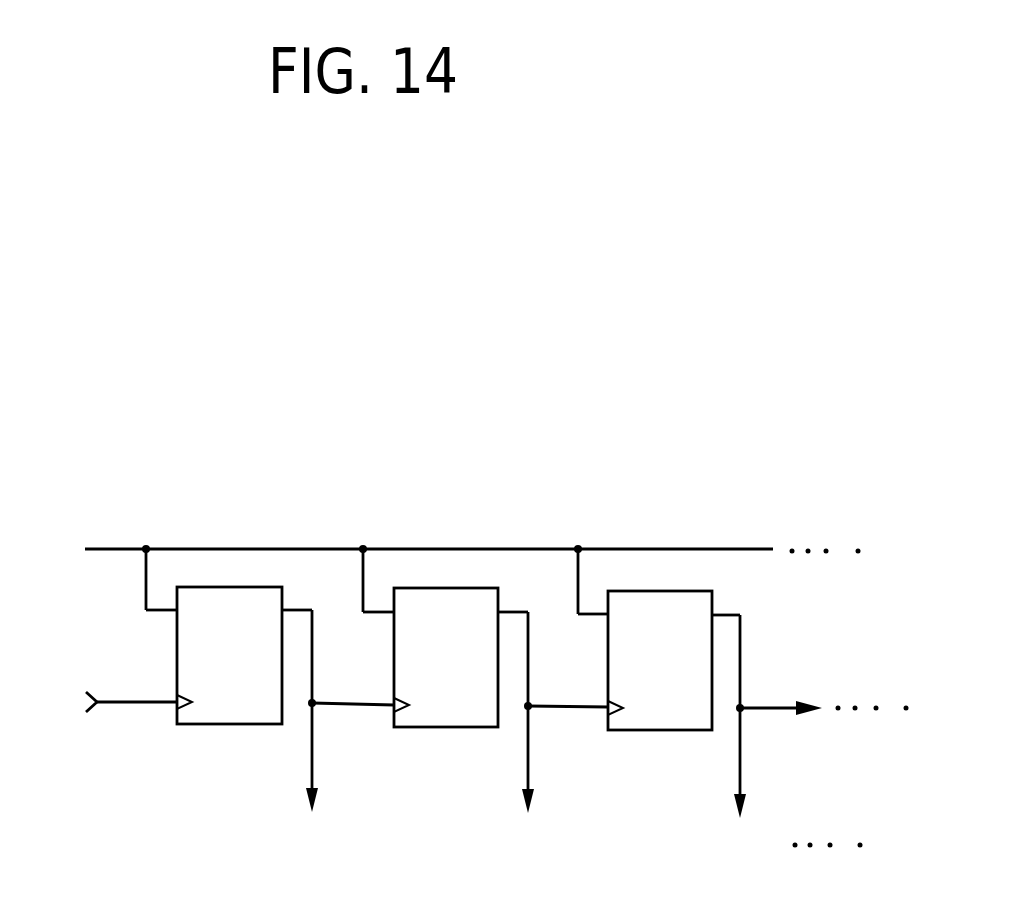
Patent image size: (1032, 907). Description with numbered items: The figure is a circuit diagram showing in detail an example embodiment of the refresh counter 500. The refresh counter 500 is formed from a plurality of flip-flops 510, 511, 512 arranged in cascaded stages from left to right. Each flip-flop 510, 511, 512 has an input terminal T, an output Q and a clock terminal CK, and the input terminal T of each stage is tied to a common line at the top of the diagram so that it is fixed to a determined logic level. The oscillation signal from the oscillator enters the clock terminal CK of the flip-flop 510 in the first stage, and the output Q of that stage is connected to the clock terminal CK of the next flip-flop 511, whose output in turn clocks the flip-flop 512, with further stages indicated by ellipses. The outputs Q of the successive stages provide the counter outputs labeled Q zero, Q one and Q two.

The refresh counter 500 is at (230, 444).
The flipflop 510 is at (210, 724).
The flipflop 511 is at (455, 727).
The flipflop 512 is at (658, 730).